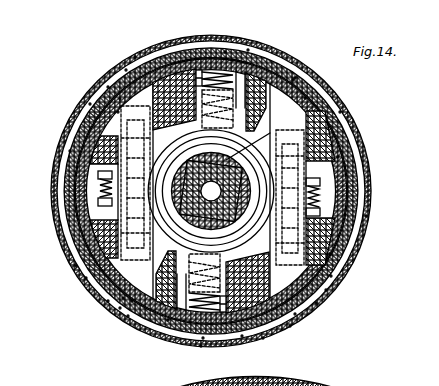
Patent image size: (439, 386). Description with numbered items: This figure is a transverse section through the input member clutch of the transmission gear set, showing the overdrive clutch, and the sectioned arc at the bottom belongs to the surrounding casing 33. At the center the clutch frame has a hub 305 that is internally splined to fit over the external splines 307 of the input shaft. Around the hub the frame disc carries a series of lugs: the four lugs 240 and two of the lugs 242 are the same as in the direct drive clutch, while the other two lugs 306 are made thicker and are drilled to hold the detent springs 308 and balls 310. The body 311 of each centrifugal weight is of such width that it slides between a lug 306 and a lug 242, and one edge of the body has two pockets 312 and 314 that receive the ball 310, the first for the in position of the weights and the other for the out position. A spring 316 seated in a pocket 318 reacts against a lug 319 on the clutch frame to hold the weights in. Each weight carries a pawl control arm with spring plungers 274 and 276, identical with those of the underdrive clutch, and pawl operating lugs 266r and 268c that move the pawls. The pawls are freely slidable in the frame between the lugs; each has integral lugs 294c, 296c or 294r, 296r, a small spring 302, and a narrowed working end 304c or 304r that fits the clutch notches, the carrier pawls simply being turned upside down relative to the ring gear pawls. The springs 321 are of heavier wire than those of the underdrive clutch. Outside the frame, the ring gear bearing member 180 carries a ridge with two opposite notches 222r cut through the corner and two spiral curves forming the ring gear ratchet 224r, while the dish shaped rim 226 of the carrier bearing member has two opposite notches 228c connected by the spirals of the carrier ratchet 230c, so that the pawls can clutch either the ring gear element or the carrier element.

The housing wall 33 is at (255, 381).
The ring gear bearing member 180 is at (332, 104).
The notches 222r is at (118, 62).
The ring gear ratchet 224r is at (355, 133).
The dish shaped rim 226 is at (343, 120).
The notches 228c is at (287, 70).
The carrier ratchet 230c is at (82, 96).
The lugs 240 is at (330, 149).
The lugs 242 is at (160, 312).
The pawl operating lug 266r is at (120, 308).
The pawl operating lug 268c is at (100, 79).
The spring plunger 274 is at (68, 258).
The spring plunger 276 is at (62, 143).
The pawl lug 294c is at (112, 91).
The pawl lug 294r is at (112, 300).
The pawl lug 296c is at (100, 293).
The pawl lug 296r is at (110, 104).
The small spring 302 is at (311, 189).
The pawl working end 304c is at (285, 72).
The pawl working end 304r is at (127, 49).
The hub 305 is at (228, 210).
The lugs 306 is at (234, 328).
The external splines 307 is at (271, 102).
The detent spring 308 is at (255, 330).
The ball 310 is at (195, 330).
The weight body 311 is at (297, 90).
The pocket 312 is at (230, 23).
The pocket 314 is at (174, 105).
The spring 316 is at (240, 42).
The pocket 318 is at (268, 50).
The lug 319 is at (217, 44).
The springs 321 is at (290, 160).